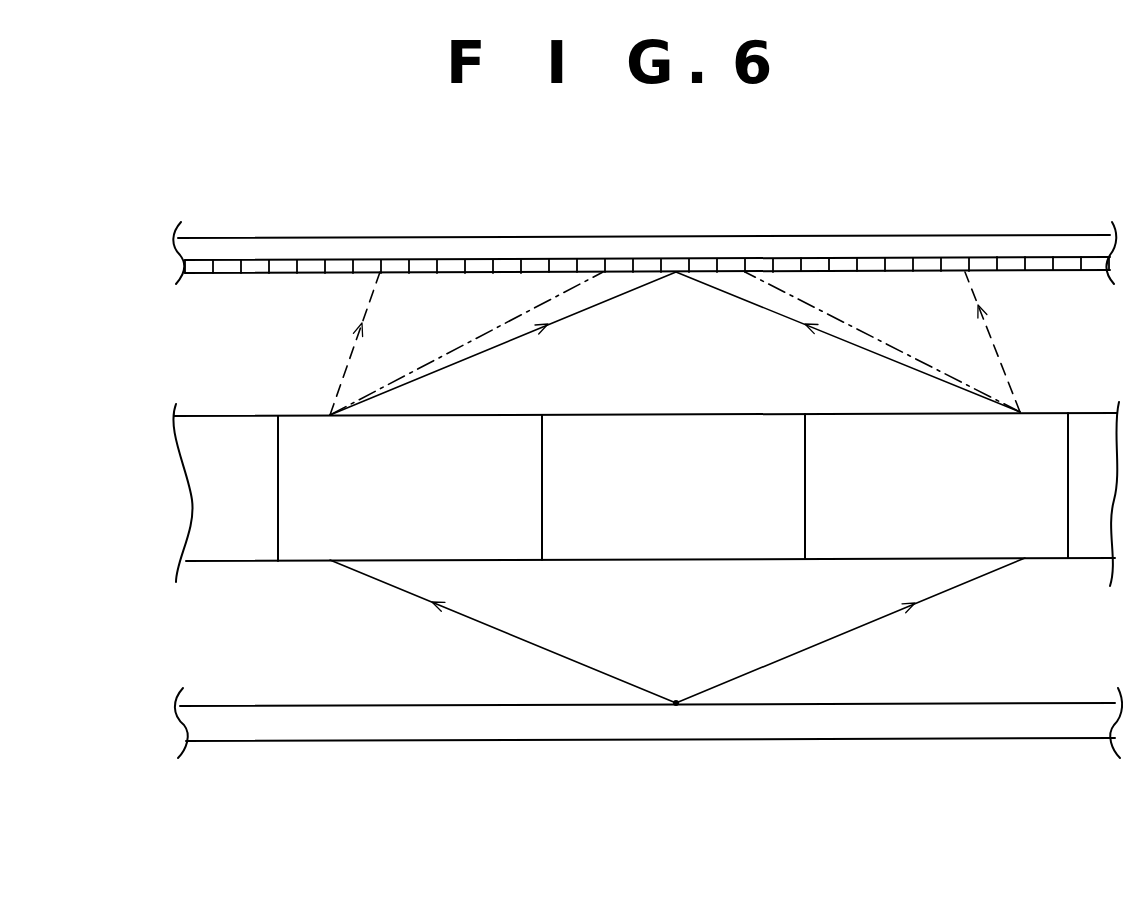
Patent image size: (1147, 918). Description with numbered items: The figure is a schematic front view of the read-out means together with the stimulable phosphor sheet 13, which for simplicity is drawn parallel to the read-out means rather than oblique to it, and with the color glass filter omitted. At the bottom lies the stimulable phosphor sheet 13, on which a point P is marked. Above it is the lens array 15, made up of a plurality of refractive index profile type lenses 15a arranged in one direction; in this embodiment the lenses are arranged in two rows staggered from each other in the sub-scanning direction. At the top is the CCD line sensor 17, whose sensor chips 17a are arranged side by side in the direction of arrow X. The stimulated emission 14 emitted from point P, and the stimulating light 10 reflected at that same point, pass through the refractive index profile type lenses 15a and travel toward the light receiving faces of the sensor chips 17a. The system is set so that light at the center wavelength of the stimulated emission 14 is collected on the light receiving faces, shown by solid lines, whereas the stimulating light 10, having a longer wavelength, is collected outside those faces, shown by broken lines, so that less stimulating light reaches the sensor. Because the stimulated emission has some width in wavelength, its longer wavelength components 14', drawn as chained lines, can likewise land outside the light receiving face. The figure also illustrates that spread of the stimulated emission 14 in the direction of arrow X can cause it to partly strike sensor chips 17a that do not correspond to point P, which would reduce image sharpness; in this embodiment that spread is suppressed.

The CCD line sensor 17 is at (1037, 236).
The sensor chips 17a is at (733, 258).
The stimulated emission 14 is at (675, 343).
The longer wavelength components of the stimulated emission 14' is at (675, 343).
The stimulating light 10 is at (1003, 352).
The lens array 15 is at (1085, 412).
The refractive index profile type lenses 15a is at (308, 562).
The stimulable phosphor sheet 13 is at (960, 739).
The point on the stimulable phosphor sheet P is at (676, 703).
The direction of arrow X is at (735, 853).